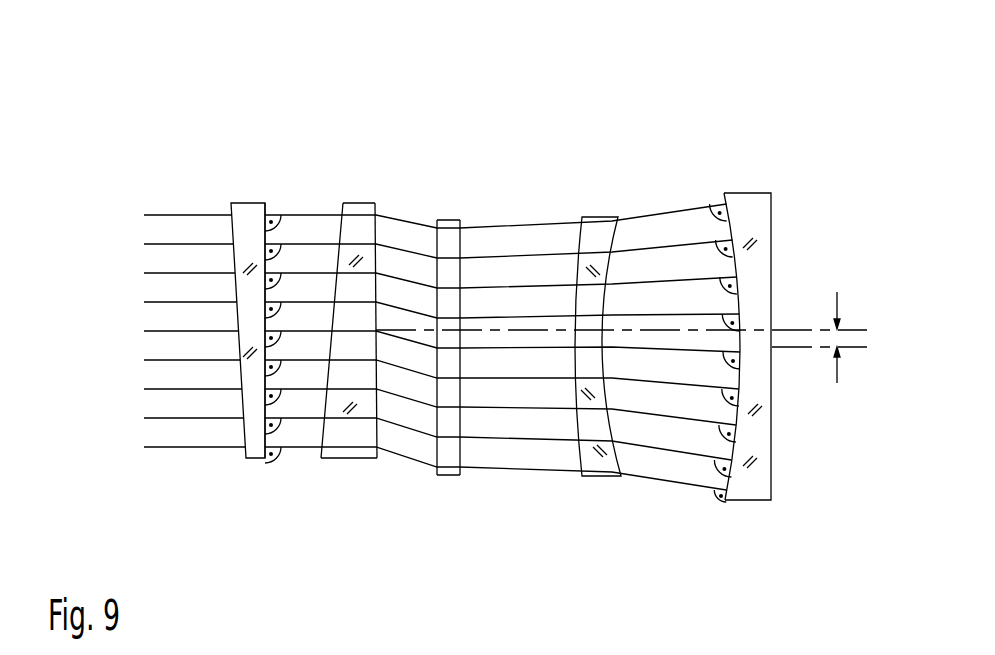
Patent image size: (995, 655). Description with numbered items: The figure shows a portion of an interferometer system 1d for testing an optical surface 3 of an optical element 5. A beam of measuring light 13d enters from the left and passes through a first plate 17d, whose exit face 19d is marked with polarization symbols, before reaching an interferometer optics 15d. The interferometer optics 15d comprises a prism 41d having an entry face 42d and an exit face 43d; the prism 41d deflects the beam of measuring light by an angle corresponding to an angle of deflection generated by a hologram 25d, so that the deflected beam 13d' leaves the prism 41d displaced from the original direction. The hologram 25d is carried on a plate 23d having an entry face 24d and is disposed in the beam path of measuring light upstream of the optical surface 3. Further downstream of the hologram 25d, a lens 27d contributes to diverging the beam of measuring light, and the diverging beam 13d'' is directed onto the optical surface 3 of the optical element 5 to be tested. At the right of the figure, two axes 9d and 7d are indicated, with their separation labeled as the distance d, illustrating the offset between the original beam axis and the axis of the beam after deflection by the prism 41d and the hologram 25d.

The interferometer system 1d is at (302, 76).
The incoming light beam 13d is at (194, 297).
The first optical plate 17d is at (254, 458).
The exit surface of first plate 19d is at (266, 458).
The prism 41d is at (358, 203).
The entry surface of wedge plate 42d is at (343, 208).
The exit surface of wedge plate 43d is at (378, 208).
The deflected light beam 13d' is at (362, 313).
The interferometer optics 15d is at (529, 127).
The plane parallel plate 23d is at (446, 476).
The entry surface of plate 24d is at (437, 468).
The hologram 25d is at (461, 476).
The lens 27d is at (601, 478).
The expanded light beam 13d'' is at (600, 320).
The optical surface 3 is at (722, 200).
The optical element 5 is at (746, 193).
The optical axis 9d is at (853, 330).
The displaced beam axis 7d is at (853, 347).
The axis offset distance d is at (829, 340).